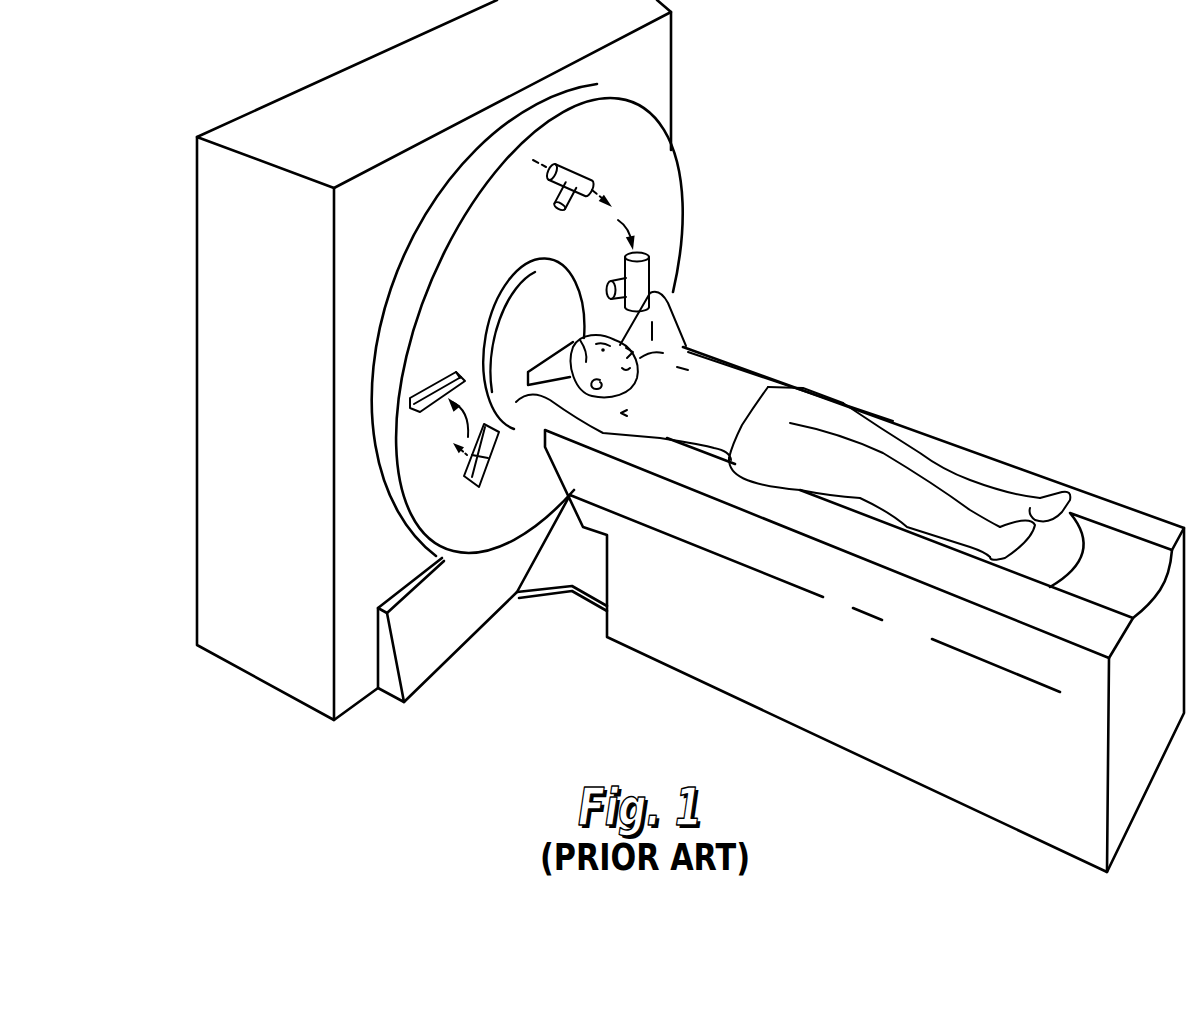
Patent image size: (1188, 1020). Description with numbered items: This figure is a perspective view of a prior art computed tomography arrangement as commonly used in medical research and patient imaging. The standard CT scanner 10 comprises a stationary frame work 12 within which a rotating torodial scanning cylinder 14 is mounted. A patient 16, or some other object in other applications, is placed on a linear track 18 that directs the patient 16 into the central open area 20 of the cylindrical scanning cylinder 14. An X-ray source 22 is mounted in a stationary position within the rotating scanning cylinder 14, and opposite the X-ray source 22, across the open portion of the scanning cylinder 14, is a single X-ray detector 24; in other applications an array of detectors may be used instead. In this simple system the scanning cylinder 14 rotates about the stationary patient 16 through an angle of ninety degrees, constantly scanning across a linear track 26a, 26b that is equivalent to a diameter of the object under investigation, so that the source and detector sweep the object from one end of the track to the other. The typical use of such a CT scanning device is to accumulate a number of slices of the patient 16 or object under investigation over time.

The CT scanner 10 is at (690, 436).
The stationary frame work 12 is at (272, 424).
The rotating torodial scanning cylinder 14 is at (477, 296).
The patient 16 is at (716, 380).
The linear track 18 is at (815, 654).
The central open area 20 is at (510, 310).
The X-ray source 22 is at (589, 178).
The X-ray detector 24 is at (462, 490).
The linear track 26a is at (525, 148).
The linear track 26b is at (497, 467).